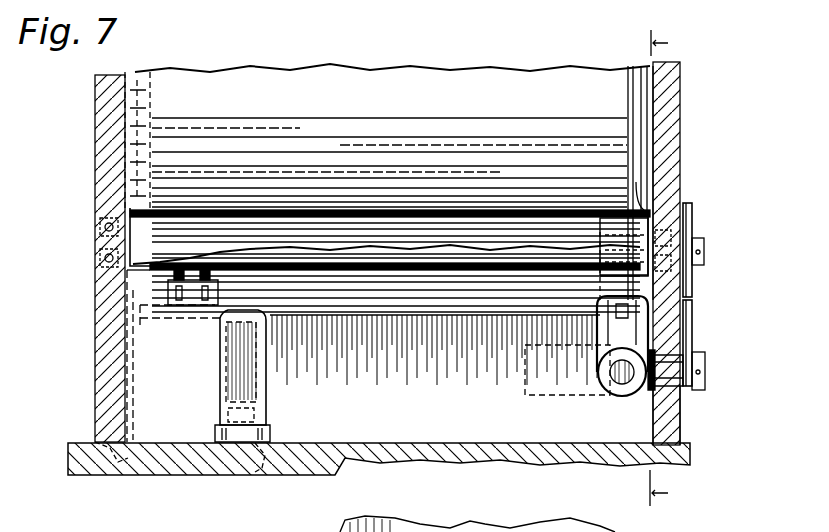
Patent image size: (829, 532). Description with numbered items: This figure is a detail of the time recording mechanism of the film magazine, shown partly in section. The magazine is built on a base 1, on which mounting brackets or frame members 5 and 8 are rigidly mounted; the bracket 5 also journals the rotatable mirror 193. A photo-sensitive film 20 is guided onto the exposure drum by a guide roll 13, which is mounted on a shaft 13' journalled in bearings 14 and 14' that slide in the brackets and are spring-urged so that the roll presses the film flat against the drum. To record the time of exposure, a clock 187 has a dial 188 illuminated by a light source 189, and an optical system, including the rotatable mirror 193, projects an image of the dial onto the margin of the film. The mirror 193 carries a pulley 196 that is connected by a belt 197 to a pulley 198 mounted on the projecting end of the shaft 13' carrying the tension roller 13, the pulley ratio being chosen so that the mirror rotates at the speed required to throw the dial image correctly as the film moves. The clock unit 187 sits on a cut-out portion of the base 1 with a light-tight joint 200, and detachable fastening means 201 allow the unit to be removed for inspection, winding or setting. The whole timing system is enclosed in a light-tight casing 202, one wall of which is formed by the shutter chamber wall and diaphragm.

The base 1 is at (152, 468).
The mounting bracket 5 is at (668, 412).
The mounting bracket 8 is at (95, 292).
The guide roll 13 is at (613, 226).
The shaft 13' is at (721, 258).
The bearing 14 is at (688, 218).
The bearing 14' is at (81, 230).
The photo-sensitive film 20 is at (386, 212).
The clock 187 is at (165, 356).
The dial 188 is at (268, 362).
The light source 189 is at (245, 382).
The rotatable mirror 193 is at (628, 382).
The pulley 196 is at (705, 388).
The belt 197 is at (692, 320).
The pulley 198 is at (693, 220).
The light-tight joint 200 is at (100, 450).
The detachable fastening means 201 is at (258, 472).
The light-tight casing 202 is at (435, 271).